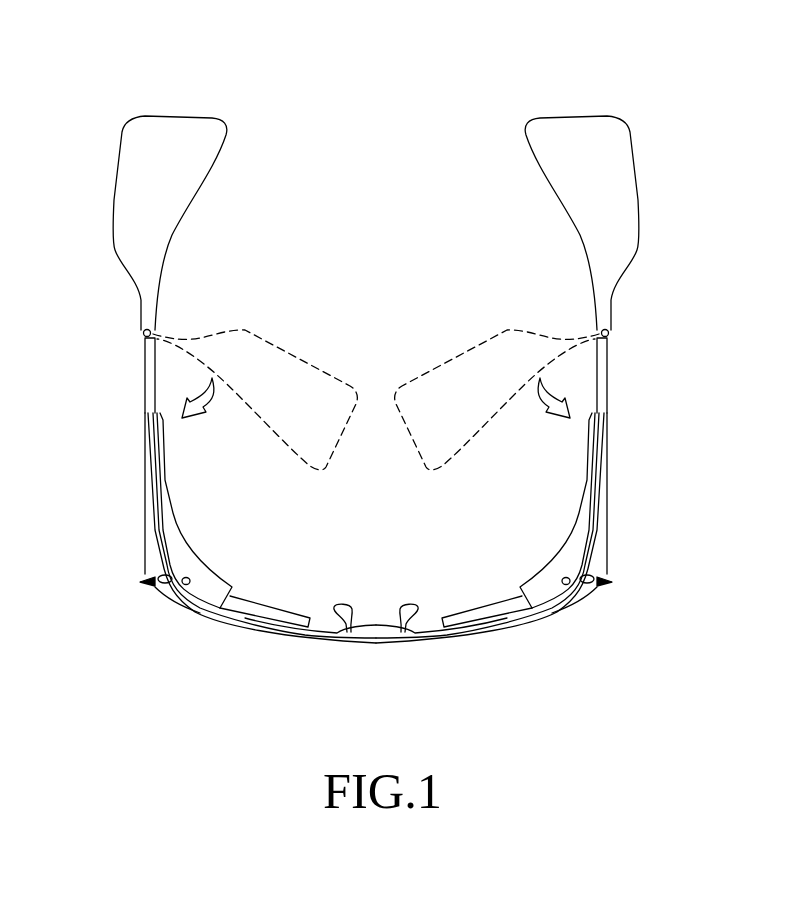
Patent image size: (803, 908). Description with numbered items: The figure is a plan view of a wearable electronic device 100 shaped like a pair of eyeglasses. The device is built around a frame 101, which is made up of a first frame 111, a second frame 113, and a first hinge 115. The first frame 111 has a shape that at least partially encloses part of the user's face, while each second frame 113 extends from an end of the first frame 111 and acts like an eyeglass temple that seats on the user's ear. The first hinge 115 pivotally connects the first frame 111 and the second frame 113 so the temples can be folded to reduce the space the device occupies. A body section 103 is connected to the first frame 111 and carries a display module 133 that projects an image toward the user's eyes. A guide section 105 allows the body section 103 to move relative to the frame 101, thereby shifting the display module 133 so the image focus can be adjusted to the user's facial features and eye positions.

The wearable electronic device 100 is at (634, 98).
The frame 101 is at (67, 299).
The body section 103 is at (145, 540).
The guide section 105 is at (146, 582).
The first frame 111 is at (148, 369).
The second frame 113 is at (148, 298).
The first hinge 115 is at (143, 334).
The display module 133 is at (266, 618).